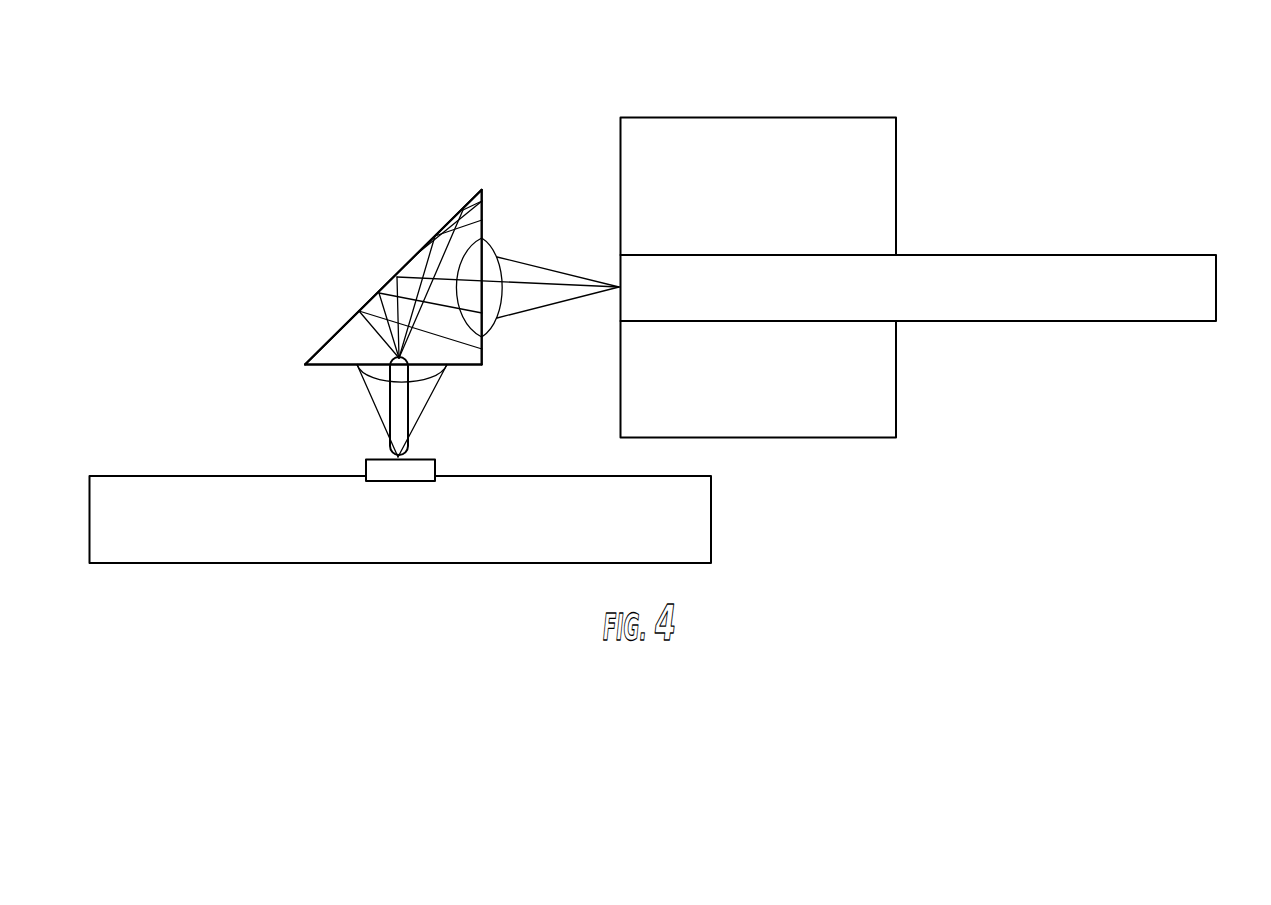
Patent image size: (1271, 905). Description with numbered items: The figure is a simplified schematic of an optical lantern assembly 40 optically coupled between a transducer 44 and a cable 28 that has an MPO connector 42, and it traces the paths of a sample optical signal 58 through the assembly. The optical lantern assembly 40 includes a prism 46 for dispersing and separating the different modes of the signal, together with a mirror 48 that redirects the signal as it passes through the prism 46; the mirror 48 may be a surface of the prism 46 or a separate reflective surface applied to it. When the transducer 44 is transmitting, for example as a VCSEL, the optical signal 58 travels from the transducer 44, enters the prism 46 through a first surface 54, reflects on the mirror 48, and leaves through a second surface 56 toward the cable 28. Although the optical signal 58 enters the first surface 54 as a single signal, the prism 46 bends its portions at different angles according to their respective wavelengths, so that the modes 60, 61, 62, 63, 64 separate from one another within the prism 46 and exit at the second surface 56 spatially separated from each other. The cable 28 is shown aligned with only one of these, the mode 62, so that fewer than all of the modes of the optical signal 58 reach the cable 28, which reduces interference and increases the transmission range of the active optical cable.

The cable 28 is at (1072, 248).
The optical lantern assembly 40 is at (370, 232).
The MPO connector 42 is at (806, 110).
The transducer 44 is at (406, 490).
The prism 46 is at (338, 349).
The mirror 48 is at (346, 321).
The first surface 54 is at (323, 366).
The second surface 56 is at (483, 210).
The optical signal 58 is at (386, 412).
The mode 60 is at (474, 200).
The mode 61 is at (463, 212).
The mode 62 is at (463, 256).
The mode 63 is at (483, 349).
The mode 64 is at (471, 348).